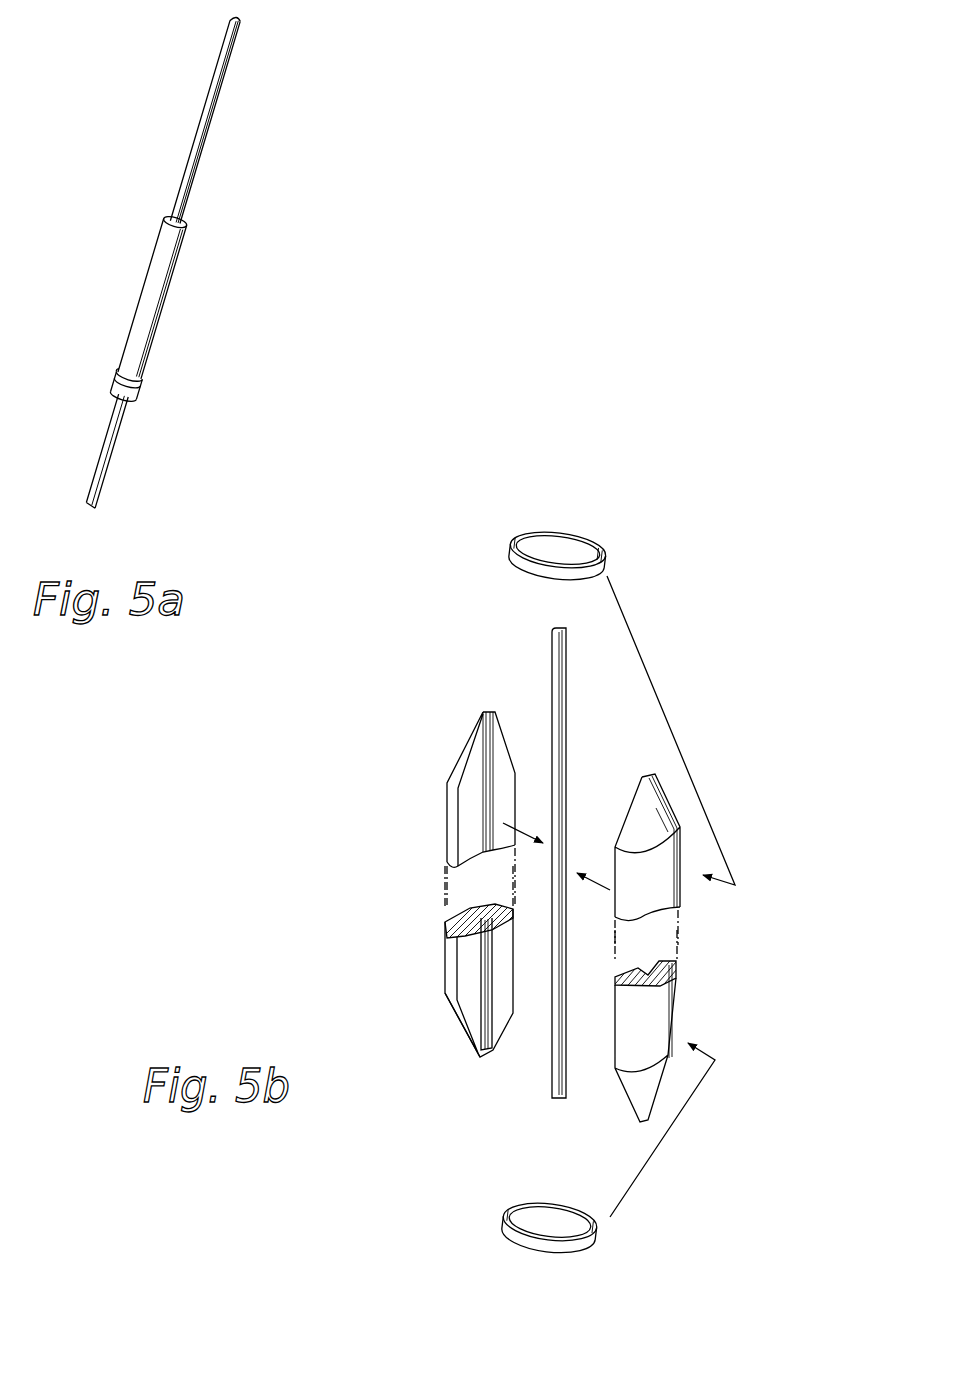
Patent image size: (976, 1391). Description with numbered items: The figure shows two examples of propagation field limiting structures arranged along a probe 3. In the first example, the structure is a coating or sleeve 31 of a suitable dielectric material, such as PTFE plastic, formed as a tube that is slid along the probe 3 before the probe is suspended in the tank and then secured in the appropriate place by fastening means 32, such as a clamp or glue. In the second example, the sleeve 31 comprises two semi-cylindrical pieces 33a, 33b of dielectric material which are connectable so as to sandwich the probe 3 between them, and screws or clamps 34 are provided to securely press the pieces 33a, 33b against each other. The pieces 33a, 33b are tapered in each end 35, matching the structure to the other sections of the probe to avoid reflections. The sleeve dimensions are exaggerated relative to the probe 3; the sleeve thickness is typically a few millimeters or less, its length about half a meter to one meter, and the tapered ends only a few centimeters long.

In FIG. 5A, the probe 3 is at (198, 135).
In FIG. 5B, the probe 3 is at (557, 658).
In FIG. 5A, the sleeve 31 is at (162, 297).
In FIG. 5B, the sleeve 31 is at (437, 760).
In FIG. 5A, the fastening means 32 is at (120, 372).
In FIG. 5B, the semi-cylindrical piece 33a is at (452, 957).
In FIG. 5B, the semi-cylindrical piece 33b is at (640, 1042).
In FIG. 5B, the screws or clamps 34 is at (510, 550).
In FIG. 5B, the tapered end 35 is at (460, 1027).